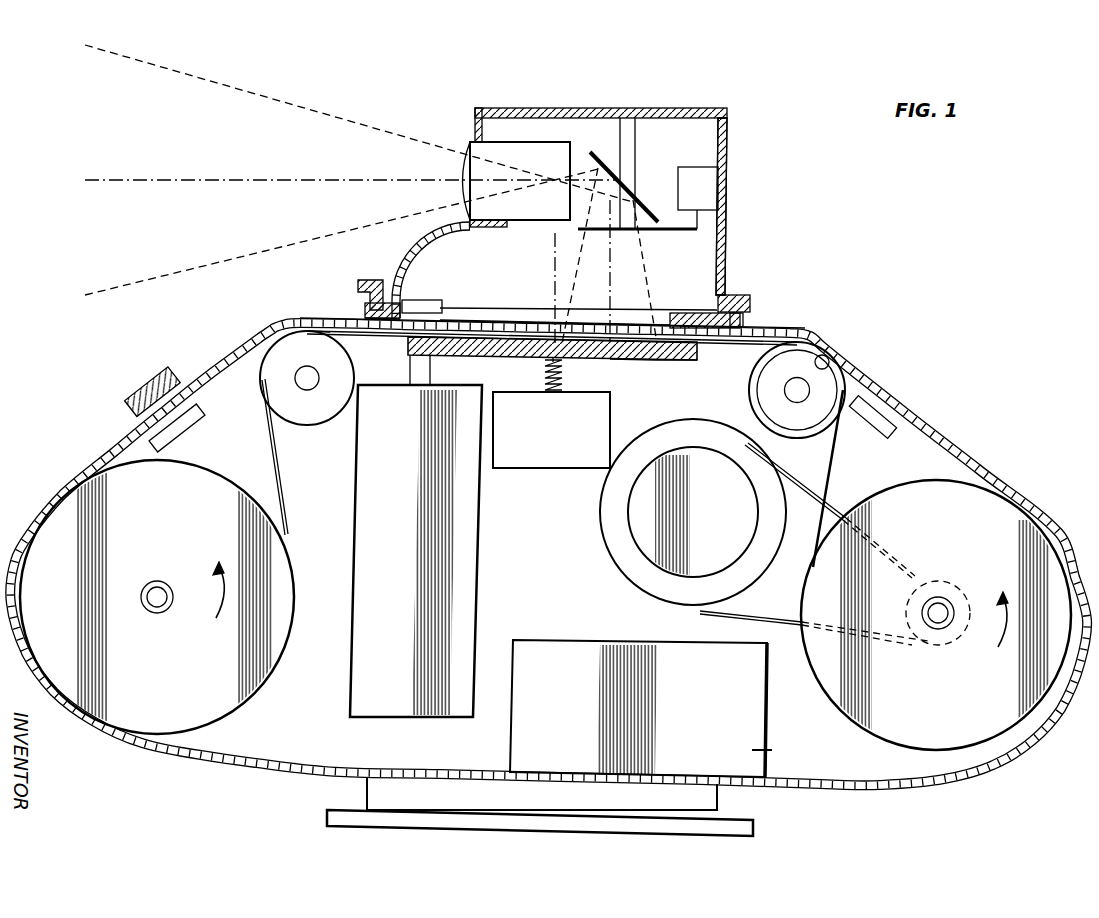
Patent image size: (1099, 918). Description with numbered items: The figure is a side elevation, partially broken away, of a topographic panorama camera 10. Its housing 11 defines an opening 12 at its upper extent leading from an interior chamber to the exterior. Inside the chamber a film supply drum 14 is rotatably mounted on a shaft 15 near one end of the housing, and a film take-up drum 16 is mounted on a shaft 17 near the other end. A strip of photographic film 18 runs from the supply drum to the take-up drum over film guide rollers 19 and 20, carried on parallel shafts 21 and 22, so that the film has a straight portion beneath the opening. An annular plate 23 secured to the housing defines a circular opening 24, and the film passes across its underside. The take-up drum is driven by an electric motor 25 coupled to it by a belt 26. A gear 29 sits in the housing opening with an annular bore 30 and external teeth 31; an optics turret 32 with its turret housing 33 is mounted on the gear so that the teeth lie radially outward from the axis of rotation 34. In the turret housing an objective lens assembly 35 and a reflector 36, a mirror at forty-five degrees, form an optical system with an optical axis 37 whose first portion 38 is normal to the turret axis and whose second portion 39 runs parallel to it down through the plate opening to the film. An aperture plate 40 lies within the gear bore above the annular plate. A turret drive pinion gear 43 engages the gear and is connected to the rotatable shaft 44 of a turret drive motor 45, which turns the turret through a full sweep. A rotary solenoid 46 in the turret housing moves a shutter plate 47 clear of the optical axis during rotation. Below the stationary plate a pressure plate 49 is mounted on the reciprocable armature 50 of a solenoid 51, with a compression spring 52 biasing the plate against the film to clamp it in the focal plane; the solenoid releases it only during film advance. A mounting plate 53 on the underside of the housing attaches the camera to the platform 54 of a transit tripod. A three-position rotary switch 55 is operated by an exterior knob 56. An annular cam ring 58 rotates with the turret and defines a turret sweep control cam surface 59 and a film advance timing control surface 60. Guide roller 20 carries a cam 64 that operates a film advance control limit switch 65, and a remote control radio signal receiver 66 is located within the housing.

The topographic panorama camera 10 is at (845, 241).
The housing 11 is at (905, 390).
The opening 12 is at (690, 318).
The film supply drum 14 is at (82, 478).
The shaft 15 is at (160, 585).
The film take-up drum 16 is at (982, 497).
The shaft 17 is at (940, 624).
The photographic film 18 is at (286, 492).
The film guide roller 19 is at (312, 412).
The film guide roller 20 is at (755, 400).
The shaft 21 is at (300, 372).
The shaft 22 is at (790, 390).
The annular plate 23 is at (798, 330).
The opening 24 is at (670, 362).
The electric motor 25 is at (652, 548).
The belt 26 is at (700, 636).
The gear 29 is at (392, 333).
The annular bore 30 is at (520, 318).
The external teeth 31 is at (368, 318).
The optics turret 32 is at (745, 184).
The turret housing 33 is at (730, 256).
The axis of rotation 34 is at (553, 252).
The objective lens assembly 35 is at (530, 140).
The reflector 36 is at (598, 150).
The optical axis 37 is at (171, 168).
The first portion of optical axis 38 is at (338, 178).
The second portion of optical axis 39 is at (614, 252).
The aperture plate 40 is at (442, 305).
The turret drive pinion gear 43 is at (410, 302).
The rotatable shaft 44 is at (430, 372).
The turret drive motor 45 is at (355, 700).
The rotary solenoid 46 is at (705, 168).
The shutter plate 47 is at (662, 232).
The pressure plate 49 is at (625, 362).
The reciprocable armature 50 is at (545, 376).
The solenoid 51 is at (537, 470).
The compression spring 52 is at (566, 372).
The mounting plate 53 is at (722, 800).
The platform 54 is at (755, 826).
The three-position rotary switch 55 is at (200, 428).
The knob 56 is at (140, 390).
The annular cam ring 58 is at (365, 285).
The turret sweep control cam surface 59 is at (750, 300).
The film advance timing control surface 60 is at (745, 313).
The cam 64 is at (793, 432).
The film advance control limit switch 65 is at (868, 430).
The remote control radio signal receiver 66 is at (775, 750).